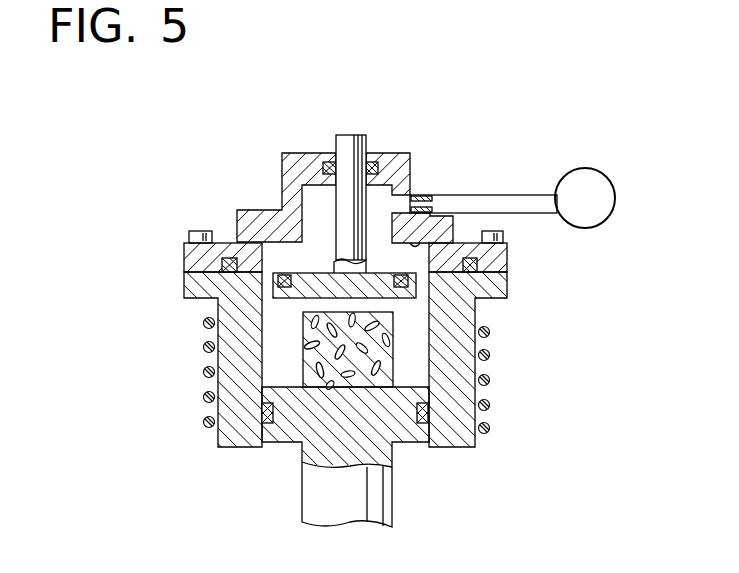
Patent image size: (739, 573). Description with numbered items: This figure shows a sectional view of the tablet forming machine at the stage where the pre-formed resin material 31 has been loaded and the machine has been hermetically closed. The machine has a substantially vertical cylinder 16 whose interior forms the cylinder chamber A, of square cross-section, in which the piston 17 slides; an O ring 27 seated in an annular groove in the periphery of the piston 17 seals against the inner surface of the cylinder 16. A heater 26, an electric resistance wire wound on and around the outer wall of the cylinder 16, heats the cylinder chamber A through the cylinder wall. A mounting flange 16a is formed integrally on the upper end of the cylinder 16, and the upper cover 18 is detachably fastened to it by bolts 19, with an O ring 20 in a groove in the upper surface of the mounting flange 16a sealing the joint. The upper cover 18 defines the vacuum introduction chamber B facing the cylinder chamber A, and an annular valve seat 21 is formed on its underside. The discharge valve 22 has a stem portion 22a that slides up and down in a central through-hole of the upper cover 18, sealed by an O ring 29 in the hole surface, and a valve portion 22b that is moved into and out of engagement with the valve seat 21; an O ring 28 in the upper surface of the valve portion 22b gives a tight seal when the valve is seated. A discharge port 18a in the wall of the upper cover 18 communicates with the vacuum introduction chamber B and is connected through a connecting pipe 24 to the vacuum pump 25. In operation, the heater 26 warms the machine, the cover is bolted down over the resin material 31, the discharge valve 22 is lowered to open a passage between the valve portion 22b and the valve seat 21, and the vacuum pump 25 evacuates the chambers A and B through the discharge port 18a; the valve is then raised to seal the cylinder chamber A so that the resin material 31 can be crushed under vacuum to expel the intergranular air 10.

The intergranular air 10 is at (393, 357).
The cylinder 16 is at (452, 442).
The mounting flange 16a is at (508, 277).
The piston 17 is at (292, 430).
The upper cover 18 is at (252, 214).
The discharge port 18a is at (420, 196).
The bolts 19 is at (190, 237).
The O ring 20 is at (229, 257).
The annular valve seat 21 is at (433, 230).
The discharge valve 22 is at (367, 128).
The stem portion 22a is at (341, 236).
The valve portion 22b is at (273, 282).
The connecting pipe 24 is at (497, 200).
The vacuum pump 25 is at (606, 183).
The heater 26 is at (490, 428).
The O ring 27 is at (419, 425).
The O ring 28 is at (416, 292).
The O ring 29 is at (374, 161).
The pre-formed resin material 31 is at (303, 330).
The cylinder chamber A is at (285, 358).
The vacuum introduction chamber B is at (313, 200).